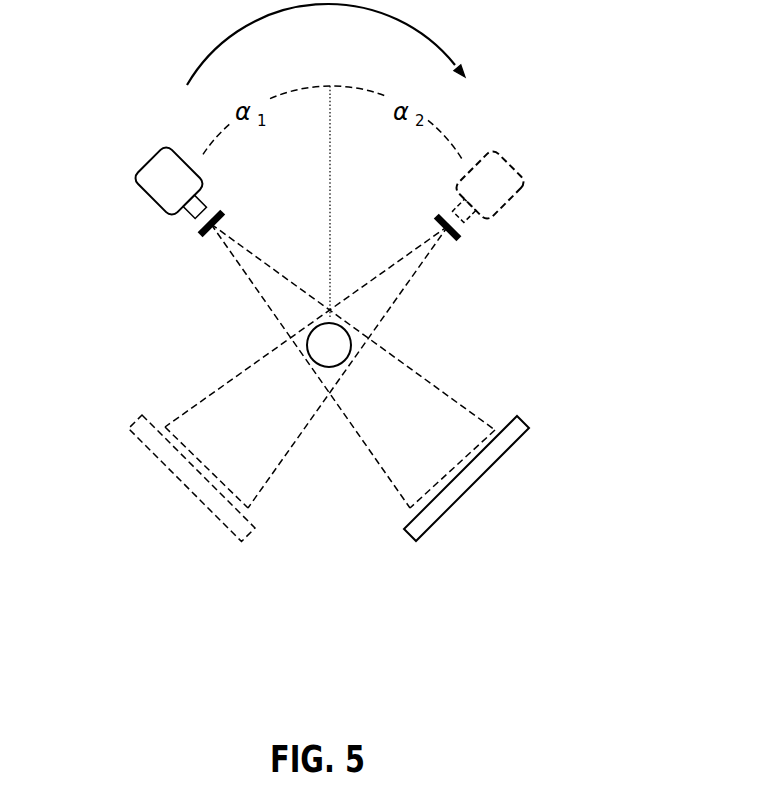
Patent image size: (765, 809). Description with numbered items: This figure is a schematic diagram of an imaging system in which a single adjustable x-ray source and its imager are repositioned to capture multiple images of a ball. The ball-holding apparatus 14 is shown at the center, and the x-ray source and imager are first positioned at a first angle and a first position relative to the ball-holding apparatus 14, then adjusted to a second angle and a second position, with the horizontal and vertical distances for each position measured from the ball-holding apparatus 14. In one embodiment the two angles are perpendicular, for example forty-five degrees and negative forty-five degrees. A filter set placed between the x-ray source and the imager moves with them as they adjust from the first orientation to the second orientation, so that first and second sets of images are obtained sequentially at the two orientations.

The ball-holding apparatus 14 is at (292, 350).